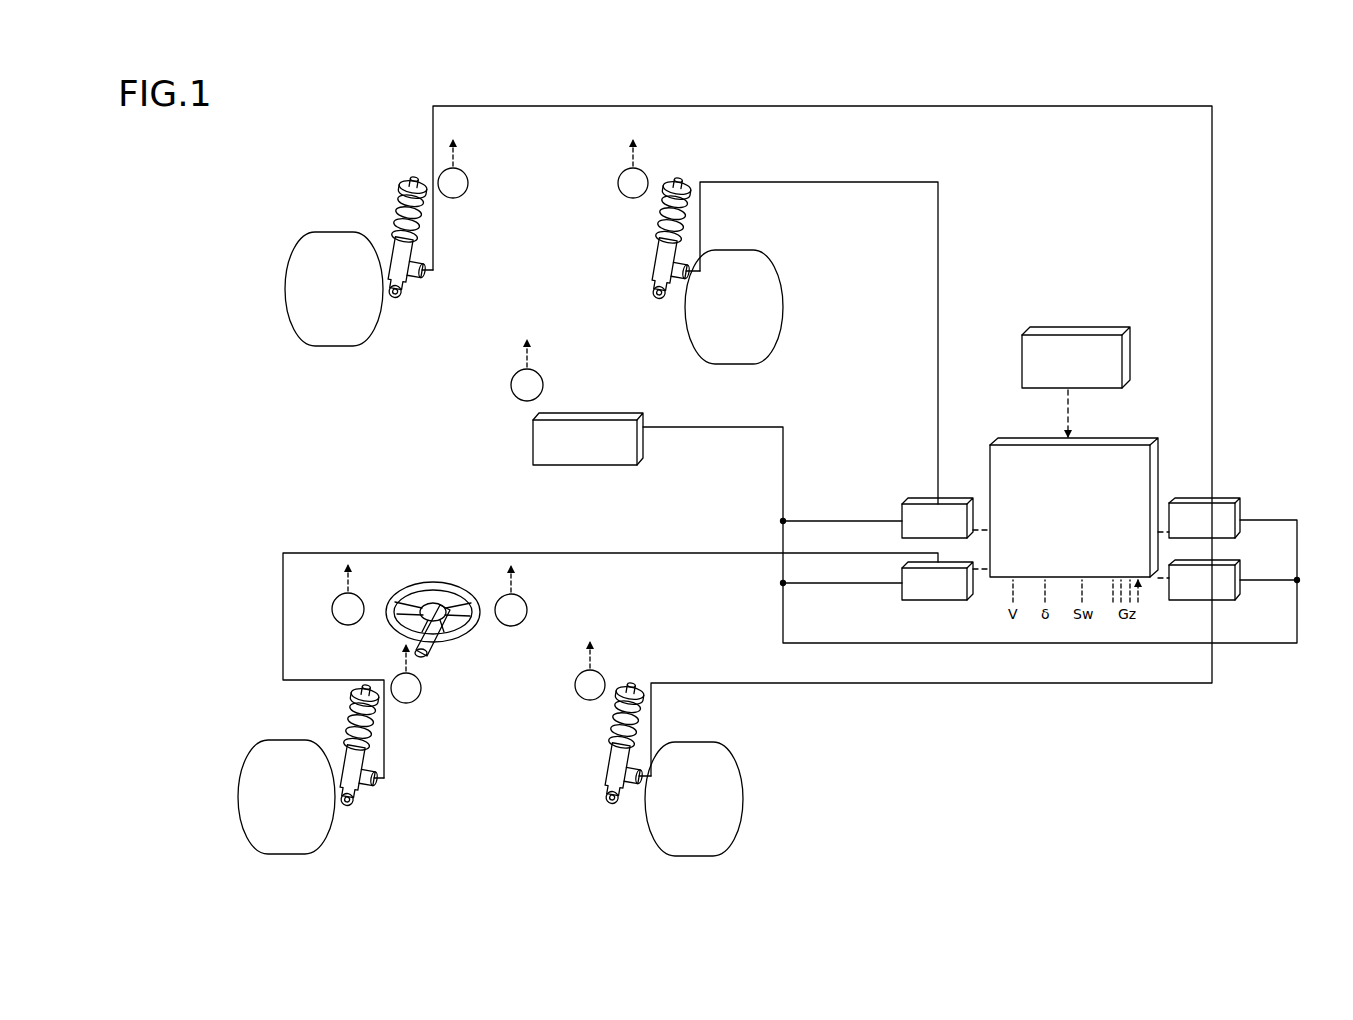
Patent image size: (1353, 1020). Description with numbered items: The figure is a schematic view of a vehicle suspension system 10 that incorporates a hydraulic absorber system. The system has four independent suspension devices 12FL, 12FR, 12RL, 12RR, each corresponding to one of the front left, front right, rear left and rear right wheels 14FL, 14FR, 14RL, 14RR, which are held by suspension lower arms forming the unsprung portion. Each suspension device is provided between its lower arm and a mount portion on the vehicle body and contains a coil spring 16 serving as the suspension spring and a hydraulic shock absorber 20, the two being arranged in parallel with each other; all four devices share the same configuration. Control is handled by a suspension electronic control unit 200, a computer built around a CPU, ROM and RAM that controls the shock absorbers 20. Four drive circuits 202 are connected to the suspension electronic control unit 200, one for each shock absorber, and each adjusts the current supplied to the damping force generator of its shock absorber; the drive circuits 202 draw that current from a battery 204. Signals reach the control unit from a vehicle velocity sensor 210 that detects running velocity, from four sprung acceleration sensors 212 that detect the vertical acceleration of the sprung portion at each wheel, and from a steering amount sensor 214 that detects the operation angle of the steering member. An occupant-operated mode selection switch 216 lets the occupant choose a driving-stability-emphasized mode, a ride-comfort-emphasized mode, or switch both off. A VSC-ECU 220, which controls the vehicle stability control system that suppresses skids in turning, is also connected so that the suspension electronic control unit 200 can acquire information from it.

The suspension system 10 is at (292, 108).
The suspension device 12RR is at (318, 184).
The suspension device 12RL is at (665, 176).
The suspension device 12FR is at (267, 683).
The suspension device 12FL is at (656, 640).
The wheel 14RR is at (305, 258).
The wheel 14RL is at (758, 345).
The wheel 14FR is at (256, 772).
The wheel 14FL is at (732, 765).
The coil spring 16 is at (518, 460).
The hydraulic shock absorber 20 is at (502, 508).
The suspension electronic control unit 200 is at (1160, 456).
The drive circuit 202 is at (903, 504).
The battery 204 is at (550, 468).
The vehicle velocity sensor 210 is at (512, 378).
The sprung acceleration sensor 212 is at (468, 178).
The steering amount sensor 214 is at (362, 604).
The mode selection switch 216 is at (526, 604).
The VSC-ECU 220 is at (1103, 330).